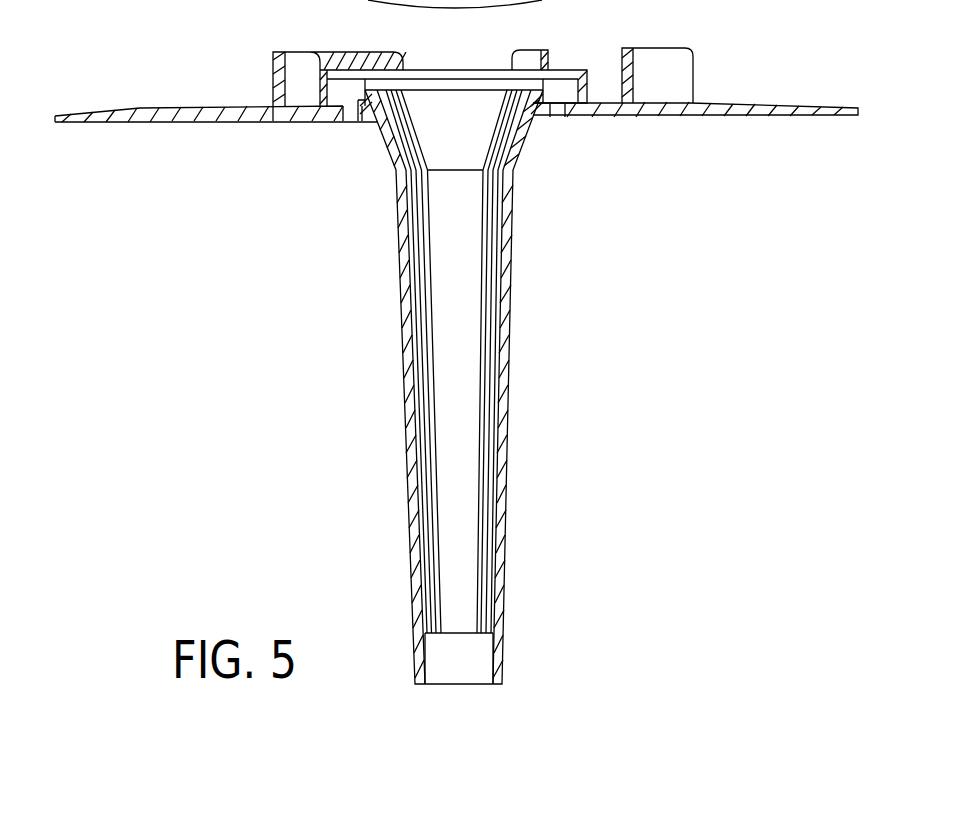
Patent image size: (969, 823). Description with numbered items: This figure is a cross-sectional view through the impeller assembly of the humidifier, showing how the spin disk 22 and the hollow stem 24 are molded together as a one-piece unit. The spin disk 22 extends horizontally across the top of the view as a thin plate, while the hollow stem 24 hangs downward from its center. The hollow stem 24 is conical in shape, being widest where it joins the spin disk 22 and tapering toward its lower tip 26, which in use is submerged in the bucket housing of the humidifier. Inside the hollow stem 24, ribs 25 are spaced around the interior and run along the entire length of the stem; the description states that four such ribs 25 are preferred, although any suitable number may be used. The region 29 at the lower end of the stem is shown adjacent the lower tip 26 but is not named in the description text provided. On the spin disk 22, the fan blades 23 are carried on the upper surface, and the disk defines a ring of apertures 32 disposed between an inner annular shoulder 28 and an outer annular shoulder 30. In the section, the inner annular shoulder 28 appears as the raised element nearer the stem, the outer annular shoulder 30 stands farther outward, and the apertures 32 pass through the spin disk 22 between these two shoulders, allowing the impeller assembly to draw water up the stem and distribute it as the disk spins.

The spin disk 22 is at (723, 110).
The fan blades 23 is at (680, 77).
The hollow stem 24 is at (503, 487).
The ribs 25 is at (428, 350).
The lower tip 26 is at (500, 670).
The inner annular shoulder 28 is at (367, 92).
The cavity 29 is at (437, 662).
The outer annular shoulder 30 is at (323, 91).
The apertures 32 is at (353, 115).